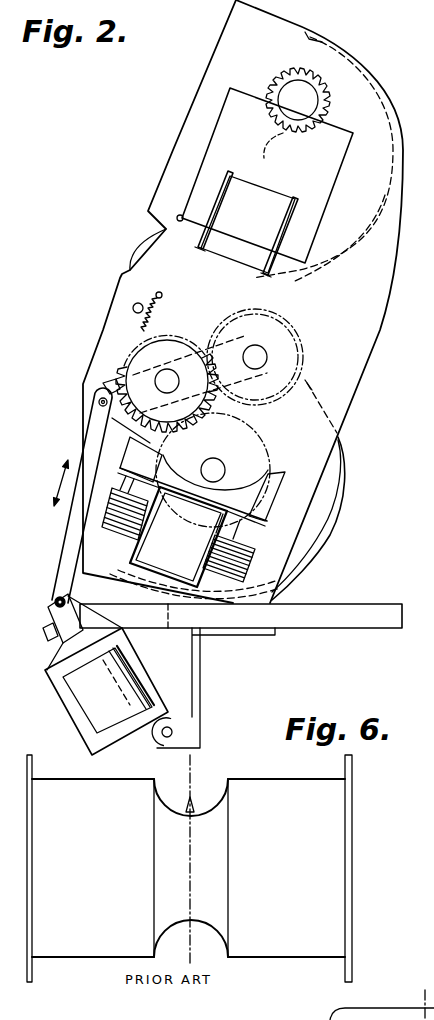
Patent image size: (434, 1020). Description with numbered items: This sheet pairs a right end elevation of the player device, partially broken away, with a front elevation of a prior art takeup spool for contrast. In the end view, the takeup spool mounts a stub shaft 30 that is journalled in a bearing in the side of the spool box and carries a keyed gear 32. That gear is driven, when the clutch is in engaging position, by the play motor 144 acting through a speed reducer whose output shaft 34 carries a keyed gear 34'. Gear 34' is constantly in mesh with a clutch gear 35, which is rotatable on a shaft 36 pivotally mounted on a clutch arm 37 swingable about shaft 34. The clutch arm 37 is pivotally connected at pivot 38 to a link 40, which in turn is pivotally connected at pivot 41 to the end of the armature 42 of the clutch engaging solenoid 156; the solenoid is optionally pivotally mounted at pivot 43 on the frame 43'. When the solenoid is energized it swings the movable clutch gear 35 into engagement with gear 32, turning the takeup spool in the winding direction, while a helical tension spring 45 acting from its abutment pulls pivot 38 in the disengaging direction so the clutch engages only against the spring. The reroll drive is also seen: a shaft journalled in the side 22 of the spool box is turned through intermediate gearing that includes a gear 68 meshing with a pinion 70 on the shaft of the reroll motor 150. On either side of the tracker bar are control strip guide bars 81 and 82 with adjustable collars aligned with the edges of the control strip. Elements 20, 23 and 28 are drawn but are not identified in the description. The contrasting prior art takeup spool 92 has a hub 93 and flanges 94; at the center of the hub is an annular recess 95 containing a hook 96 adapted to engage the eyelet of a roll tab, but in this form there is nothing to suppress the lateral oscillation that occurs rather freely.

In FIG. 2, the housing 20 is at (393, 270).
In FIG. 2, the side of the spool box 22 is at (357, 355).
In FIG. 2, the guide channel 23 is at (323, 170).
In FIG. 2, the drum 28 is at (322, 540).
In FIG. 2, the stub shaft 30 is at (222, 468).
In FIG. 2, the gear 32 is at (256, 434).
In FIG. 2, the output shaft 34 is at (292, 348).
In FIG. 2, the gear 34' is at (218, 348).
In FIG. 2, the clutch gear 35 is at (186, 326).
In FIG. 2, the shaft 36 is at (164, 377).
In FIG. 2, the clutch arm 37 is at (104, 386).
In FIG. 2, the pivot 38 is at (97, 402).
In FIG. 2, the link 40 is at (93, 432).
In FIG. 2, the pivot 41 is at (56, 600).
In FIG. 2, the armature 42 is at (72, 642).
In FIG. 2, the pivot 43 is at (143, 740).
In FIG. 2, the frame 43' is at (241, 676).
In FIG. 2, the helical tension spring 45 is at (161, 307).
In FIG. 2, the gear 68 is at (289, 73).
In FIG. 2, the pinion 70 is at (282, 138).
In FIG. 2, the control strip guide bar 81 is at (178, 218).
In FIG. 2, the control strip guide bar 82 is at (133, 308).
In FIG. 2, the play motor 144 is at (190, 559).
In FIG. 2, the reroll motor 150 is at (295, 189).
In FIG. 2, the clutch engaging solenoid 156 is at (90, 695).
In FIG. 6, the takeup spool 92 is at (325, 860).
In FIG. 6, the hub 93 is at (280, 775).
In FIG. 6, the flanges 94 is at (352, 767).
In FIG. 6, the annular recess 95 is at (207, 803).
In FIG. 6, the hook 96 is at (185, 810).